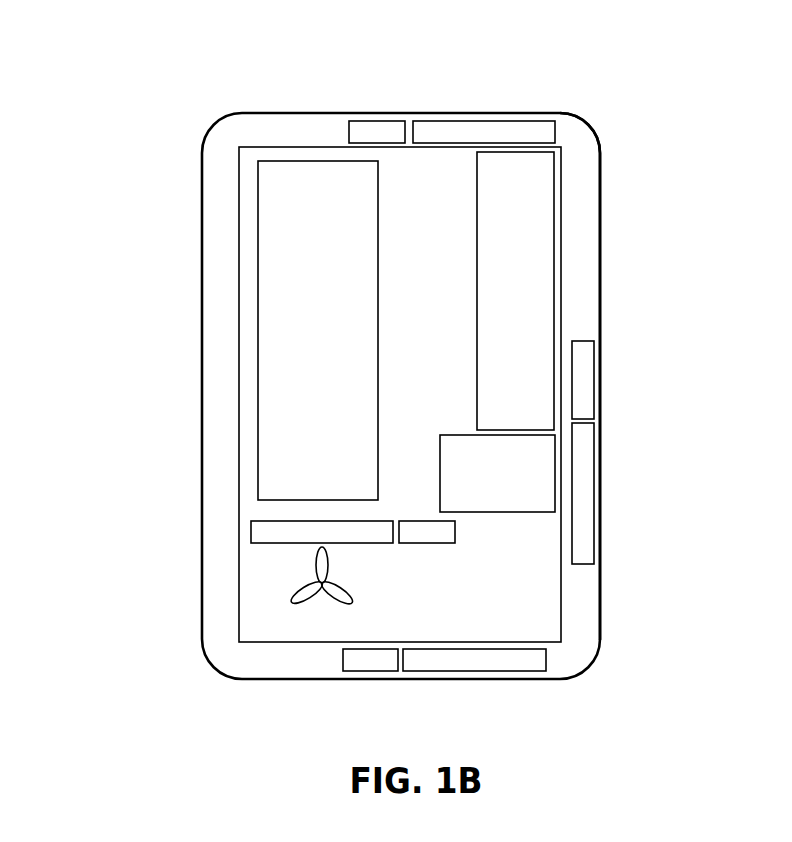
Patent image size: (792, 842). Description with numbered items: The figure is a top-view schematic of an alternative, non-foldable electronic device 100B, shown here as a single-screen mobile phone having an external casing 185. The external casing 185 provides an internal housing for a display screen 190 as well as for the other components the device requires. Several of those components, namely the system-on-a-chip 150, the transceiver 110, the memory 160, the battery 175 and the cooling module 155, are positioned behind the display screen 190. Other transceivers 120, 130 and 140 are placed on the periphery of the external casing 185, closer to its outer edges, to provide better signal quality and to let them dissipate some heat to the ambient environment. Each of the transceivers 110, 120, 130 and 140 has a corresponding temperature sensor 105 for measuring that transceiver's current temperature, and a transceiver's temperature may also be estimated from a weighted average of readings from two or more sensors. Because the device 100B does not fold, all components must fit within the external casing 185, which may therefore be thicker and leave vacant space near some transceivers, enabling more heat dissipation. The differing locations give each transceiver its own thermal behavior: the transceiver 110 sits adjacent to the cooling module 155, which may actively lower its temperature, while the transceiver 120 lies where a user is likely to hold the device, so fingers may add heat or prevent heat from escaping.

The electronic device 100B is at (128, 61).
The display screen 190 is at (573, 117).
The external casing 185 is at (600, 217).
The temperature sensor 105 is at (468, 396).
The transceiver 130 is at (484, 132).
The system-on-a-chip 150 is at (318, 330).
The battery 175 is at (515, 291).
The memory 160 is at (497, 473).
The transceiver 120 is at (583, 493).
The transceiver 110 is at (322, 532).
The transceiver 140 is at (474, 660).
The cooling module 155 is at (345, 588).